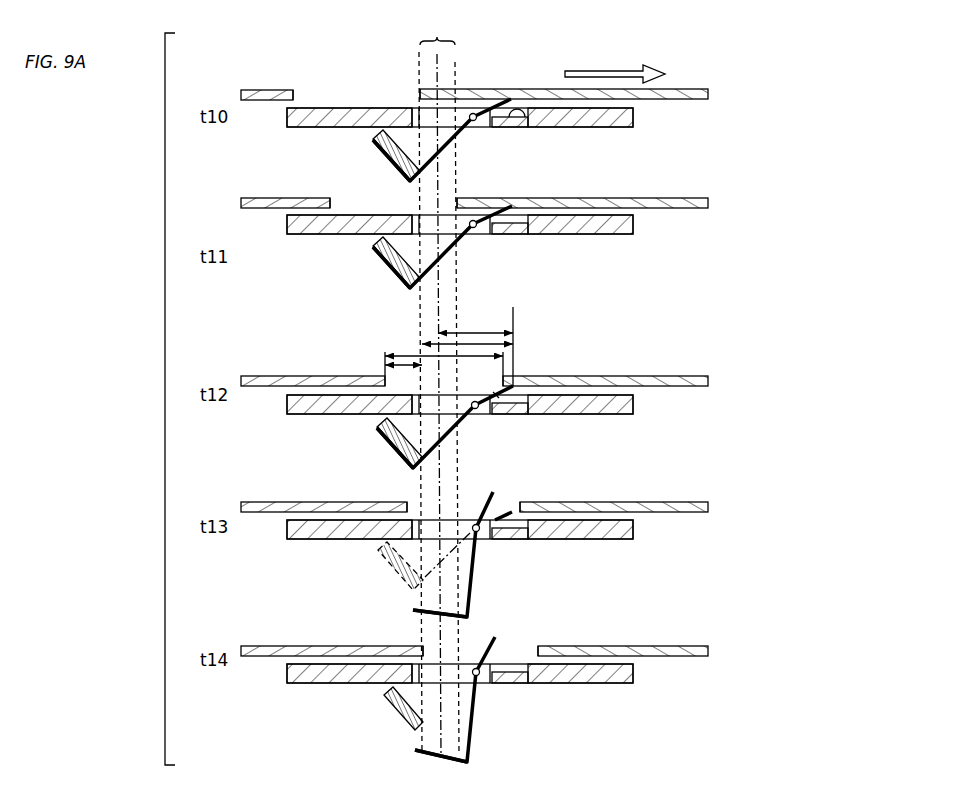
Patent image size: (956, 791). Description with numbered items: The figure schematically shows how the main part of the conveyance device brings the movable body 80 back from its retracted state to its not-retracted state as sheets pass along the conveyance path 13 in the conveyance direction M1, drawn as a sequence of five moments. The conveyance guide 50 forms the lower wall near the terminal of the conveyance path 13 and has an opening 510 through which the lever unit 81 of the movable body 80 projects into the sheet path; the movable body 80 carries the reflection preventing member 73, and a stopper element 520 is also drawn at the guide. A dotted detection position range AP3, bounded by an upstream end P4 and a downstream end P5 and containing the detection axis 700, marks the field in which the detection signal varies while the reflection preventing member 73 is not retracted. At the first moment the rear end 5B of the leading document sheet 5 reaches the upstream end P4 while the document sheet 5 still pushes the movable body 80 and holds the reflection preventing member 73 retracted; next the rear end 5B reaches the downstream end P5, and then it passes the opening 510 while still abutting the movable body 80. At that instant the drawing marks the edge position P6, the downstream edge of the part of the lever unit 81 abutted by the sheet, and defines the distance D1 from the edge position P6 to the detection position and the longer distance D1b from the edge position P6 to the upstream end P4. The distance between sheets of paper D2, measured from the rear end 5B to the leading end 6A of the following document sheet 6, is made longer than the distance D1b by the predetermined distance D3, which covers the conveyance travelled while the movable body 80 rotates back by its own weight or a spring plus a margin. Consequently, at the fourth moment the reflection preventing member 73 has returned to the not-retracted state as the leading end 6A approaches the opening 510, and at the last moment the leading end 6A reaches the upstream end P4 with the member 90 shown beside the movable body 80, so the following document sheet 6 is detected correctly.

The document sheet 5 is at (670, 101).
The rear end of the document sheet 5B is at (420, 92).
The following document sheet 6 is at (258, 101).
The leading end of the following document sheet 6A is at (330, 202).
The conveyance path 13 is at (347, 90).
The conveyance guide 50 is at (300, 128).
The reflection preventing member 73 is at (404, 176).
The movable body 80 is at (452, 142).
The lever unit 81 is at (497, 394).
The pressing pad 90 is at (373, 139).
The opening 510 is at (418, 106).
The stopper 520 is at (522, 121).
The detection axis 700 is at (440, 62).
The upstream end of the detection position range P4 is at (419, 62).
The downstream end of the detection position range P5 is at (456, 62).
The edge position P6 is at (513, 338).
The detection position range AP3 is at (437, 30).
The conveyance direction M1 is at (615, 65).
The distance D1 is at (475, 331).
The distance D1b is at (433, 342).
The distance between sheets of paper D2 is at (402, 356).
The predetermined distance D3 is at (415, 362).